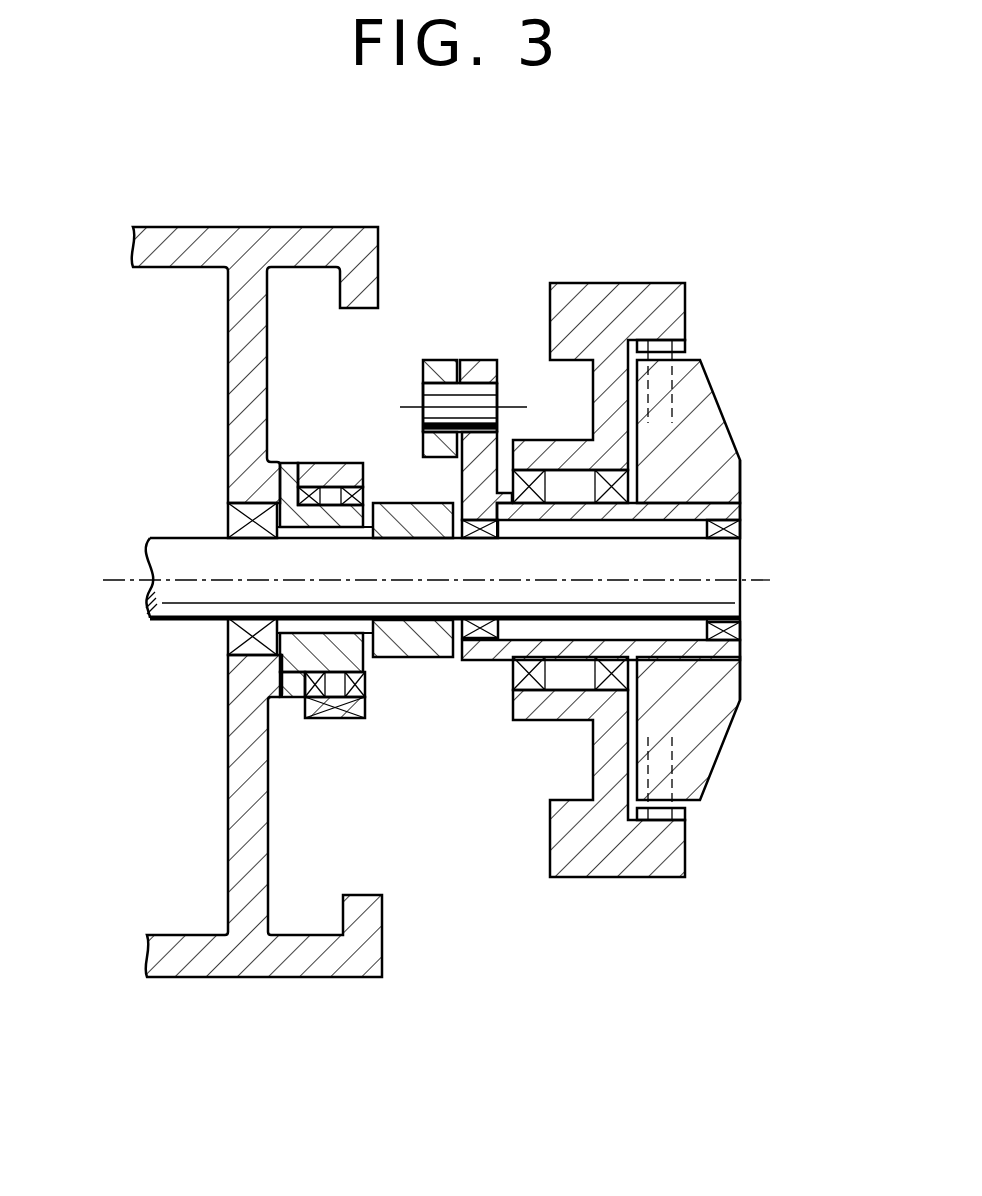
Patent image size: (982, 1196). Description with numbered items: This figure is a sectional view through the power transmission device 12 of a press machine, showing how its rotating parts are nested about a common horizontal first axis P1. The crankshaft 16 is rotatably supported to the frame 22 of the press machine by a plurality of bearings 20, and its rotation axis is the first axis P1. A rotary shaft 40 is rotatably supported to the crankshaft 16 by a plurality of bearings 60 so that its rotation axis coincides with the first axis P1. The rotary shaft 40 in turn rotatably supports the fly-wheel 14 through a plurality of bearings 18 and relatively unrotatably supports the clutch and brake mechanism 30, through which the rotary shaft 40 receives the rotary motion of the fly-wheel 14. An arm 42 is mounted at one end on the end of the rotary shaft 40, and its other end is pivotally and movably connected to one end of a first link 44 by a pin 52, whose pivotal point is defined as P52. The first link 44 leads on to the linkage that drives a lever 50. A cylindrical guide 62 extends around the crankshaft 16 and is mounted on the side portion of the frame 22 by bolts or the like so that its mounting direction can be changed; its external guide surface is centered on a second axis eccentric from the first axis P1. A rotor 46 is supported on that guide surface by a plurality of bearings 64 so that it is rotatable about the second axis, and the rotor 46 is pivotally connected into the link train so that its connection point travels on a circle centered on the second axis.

The power transmission device 12 is at (421, 283).
The fly-wheel 14 is at (605, 300).
The crankshaft 16 is at (172, 600).
The bearings 18 is at (592, 670).
The bearings 20 is at (238, 518).
The frame 22 is at (302, 237).
The clutch and brake mechanism 30 is at (700, 420).
The rotary shaft 40 is at (722, 515).
The arm 42 is at (490, 370).
The first link 44 is at (440, 370).
The rotor 46 is at (332, 470).
The lever 50 is at (410, 640).
The pin 52 is at (490, 402).
The bearings 60 is at (478, 650).
The cylindrical guide 62 is at (290, 660).
The bearings 64 is at (346, 718).
The first axis P1 is at (165, 573).
The pivotal point P52 is at (440, 406).